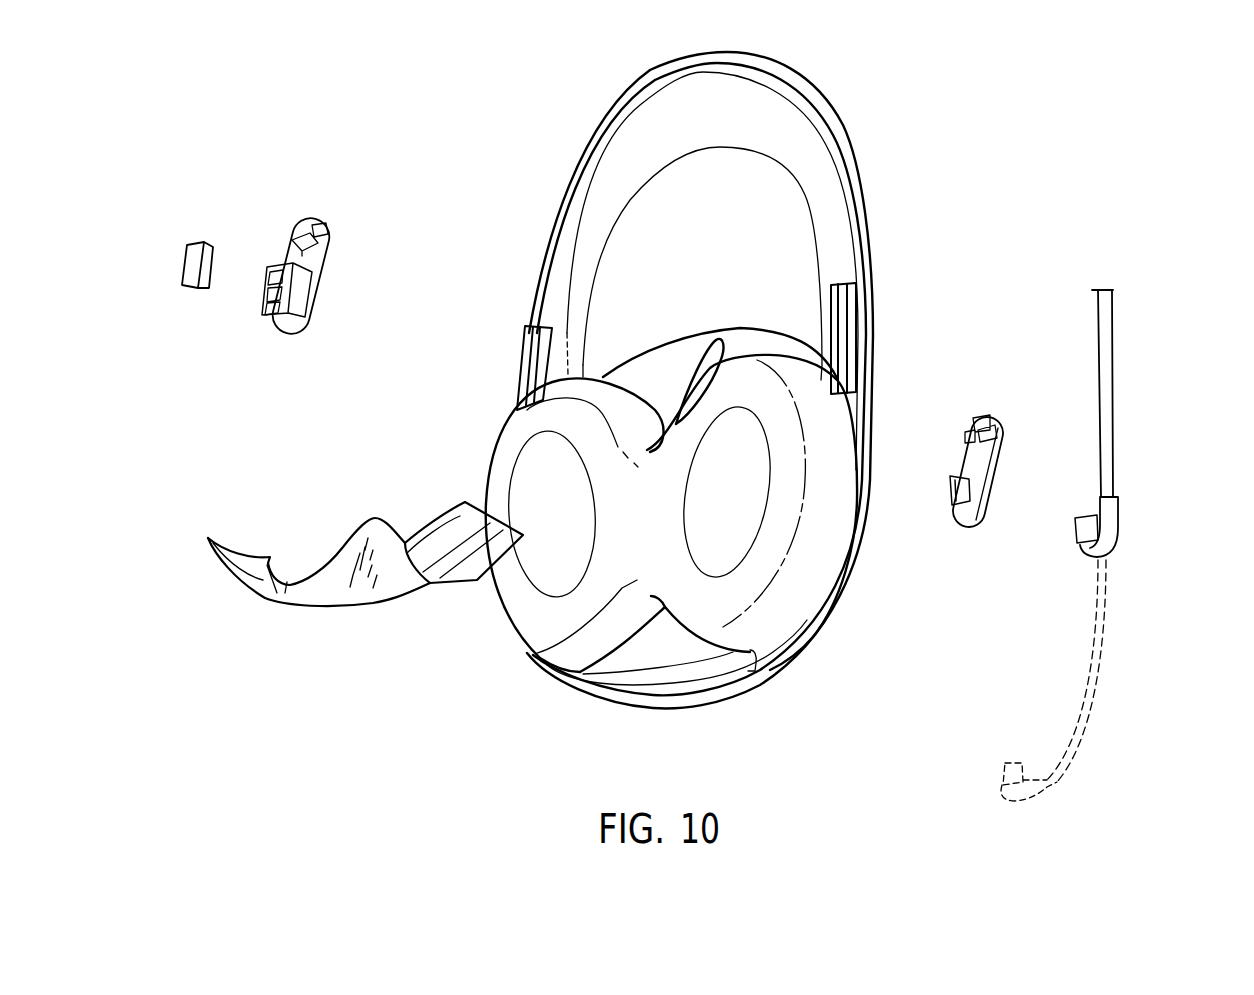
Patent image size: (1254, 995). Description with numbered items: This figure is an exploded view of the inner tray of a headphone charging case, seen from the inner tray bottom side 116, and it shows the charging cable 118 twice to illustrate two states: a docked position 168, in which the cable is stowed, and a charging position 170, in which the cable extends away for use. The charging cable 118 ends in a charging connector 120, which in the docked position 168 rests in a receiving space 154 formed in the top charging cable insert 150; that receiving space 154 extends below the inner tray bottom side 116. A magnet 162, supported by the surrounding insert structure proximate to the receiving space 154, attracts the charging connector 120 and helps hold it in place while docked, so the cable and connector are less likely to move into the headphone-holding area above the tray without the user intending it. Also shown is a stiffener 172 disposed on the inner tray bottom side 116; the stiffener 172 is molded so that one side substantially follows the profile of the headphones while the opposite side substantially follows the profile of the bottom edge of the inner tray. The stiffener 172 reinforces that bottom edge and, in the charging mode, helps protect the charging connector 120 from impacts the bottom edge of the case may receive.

The inner tray bottom side 116 is at (650, 252).
The charging cable 118 is at (1108, 405).
The charging connector 120 is at (1107, 528).
The top charging cable insert 150 is at (972, 467).
The receiving space 154 is at (288, 258).
The magnet 162 is at (187, 270).
The docked position 168 is at (1065, 527).
The charging position 170 is at (993, 773).
The stiffener 172 is at (337, 608).